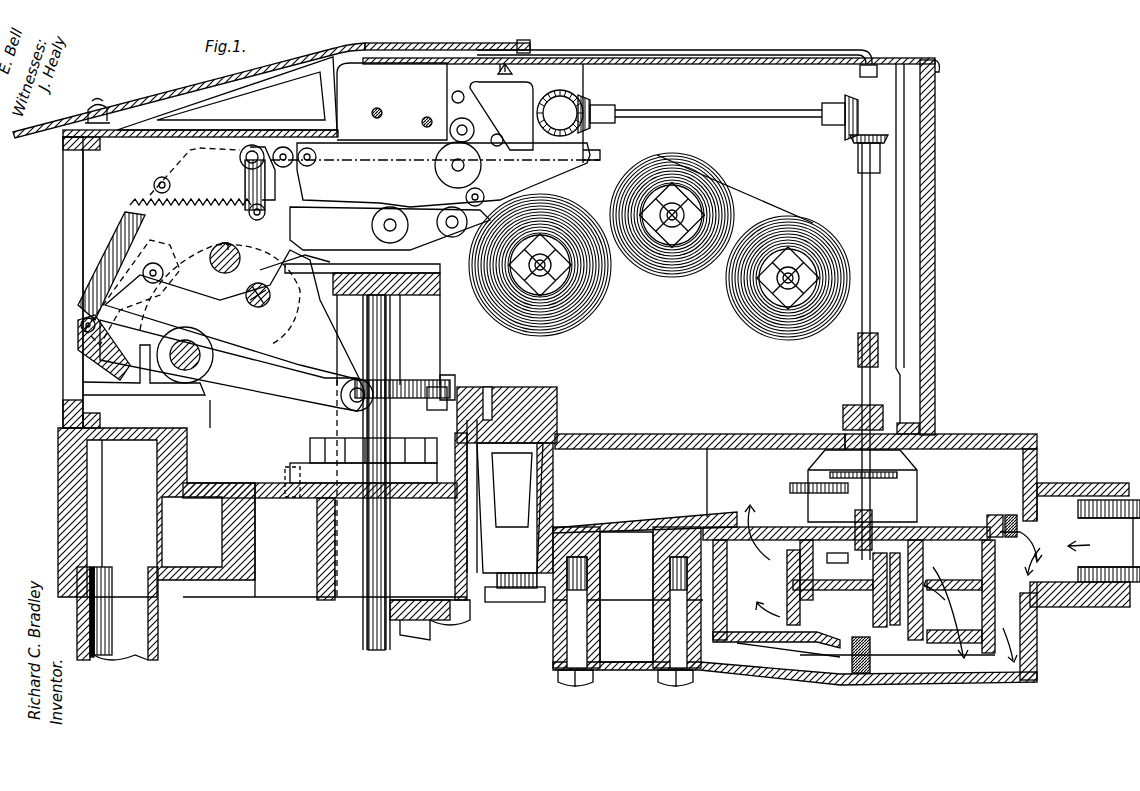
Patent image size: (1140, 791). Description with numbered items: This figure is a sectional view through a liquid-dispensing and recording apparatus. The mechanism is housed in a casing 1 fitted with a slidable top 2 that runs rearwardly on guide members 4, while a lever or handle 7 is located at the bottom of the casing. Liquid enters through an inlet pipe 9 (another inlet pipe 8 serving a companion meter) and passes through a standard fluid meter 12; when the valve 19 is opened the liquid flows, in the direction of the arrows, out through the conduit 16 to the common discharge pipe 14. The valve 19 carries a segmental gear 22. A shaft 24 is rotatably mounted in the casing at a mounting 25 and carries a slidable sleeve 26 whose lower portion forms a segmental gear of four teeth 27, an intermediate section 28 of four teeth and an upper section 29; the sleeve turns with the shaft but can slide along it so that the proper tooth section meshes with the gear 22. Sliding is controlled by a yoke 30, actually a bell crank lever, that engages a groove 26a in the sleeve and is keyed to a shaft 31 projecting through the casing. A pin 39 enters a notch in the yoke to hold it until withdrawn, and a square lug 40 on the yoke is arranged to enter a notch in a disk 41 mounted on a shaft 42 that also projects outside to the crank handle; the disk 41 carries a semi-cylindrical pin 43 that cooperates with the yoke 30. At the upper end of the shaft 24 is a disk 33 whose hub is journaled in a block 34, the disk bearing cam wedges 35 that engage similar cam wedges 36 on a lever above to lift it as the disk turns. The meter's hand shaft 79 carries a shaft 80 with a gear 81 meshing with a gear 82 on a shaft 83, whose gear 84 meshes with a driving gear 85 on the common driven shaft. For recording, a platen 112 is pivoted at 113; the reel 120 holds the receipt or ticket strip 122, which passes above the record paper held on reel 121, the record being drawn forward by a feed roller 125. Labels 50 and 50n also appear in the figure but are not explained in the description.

The casing 1 is at (950, 206).
The slidable top 2 is at (375, 44).
The guide members 4 is at (797, 52).
The lever or handle 7 is at (420, 635).
The inlet tube 8 is at (797, 568).
The inlet tube 9 is at (1085, 545).
The fluid meter 12 is at (985, 445).
The pipe 14 is at (158, 640).
The conduit 16 is at (665, 455).
The valve 19 is at (538, 492).
The gear 22 is at (455, 395).
The shaft 24 is at (350, 342).
The shaft mounting 25 is at (405, 570).
The slidable sleeve 26 is at (400, 400).
The groove 26a is at (447, 372).
The lower segmental gear teeth 27 is at (330, 445).
The intermediate tooth section 28 is at (500, 385).
The upper tooth section 29 is at (290, 515).
The yoke 30 is at (200, 298).
The shaft 31 is at (213, 355).
The disk 33 is at (440, 262).
The block 34 is at (420, 292).
The cam wedges 35 is at (357, 300).
The cam wedges 36 is at (285, 395).
The pin 39 is at (70, 342).
The square lug 40 is at (90, 278).
The disk 41 is at (268, 325).
The shaft 42 is at (225, 262).
The pin 43 is at (258, 283).
The spring 50 is at (135, 215).
The spring anchor 50n is at (78, 322).
The shaft 79 is at (850, 398).
The shaft 80 is at (858, 230).
The gear 81 is at (852, 140).
The gear 82 is at (858, 95).
The shaft 83 is at (745, 110).
The gear 84 is at (595, 100).
The gear 85 is at (560, 104).
The platen 112 is at (430, 168).
The pivot 113 is at (312, 160).
The reel 120 is at (752, 293).
The reel 121 is at (677, 237).
The strip 122 is at (778, 182).
The feed roller 125 is at (600, 160).